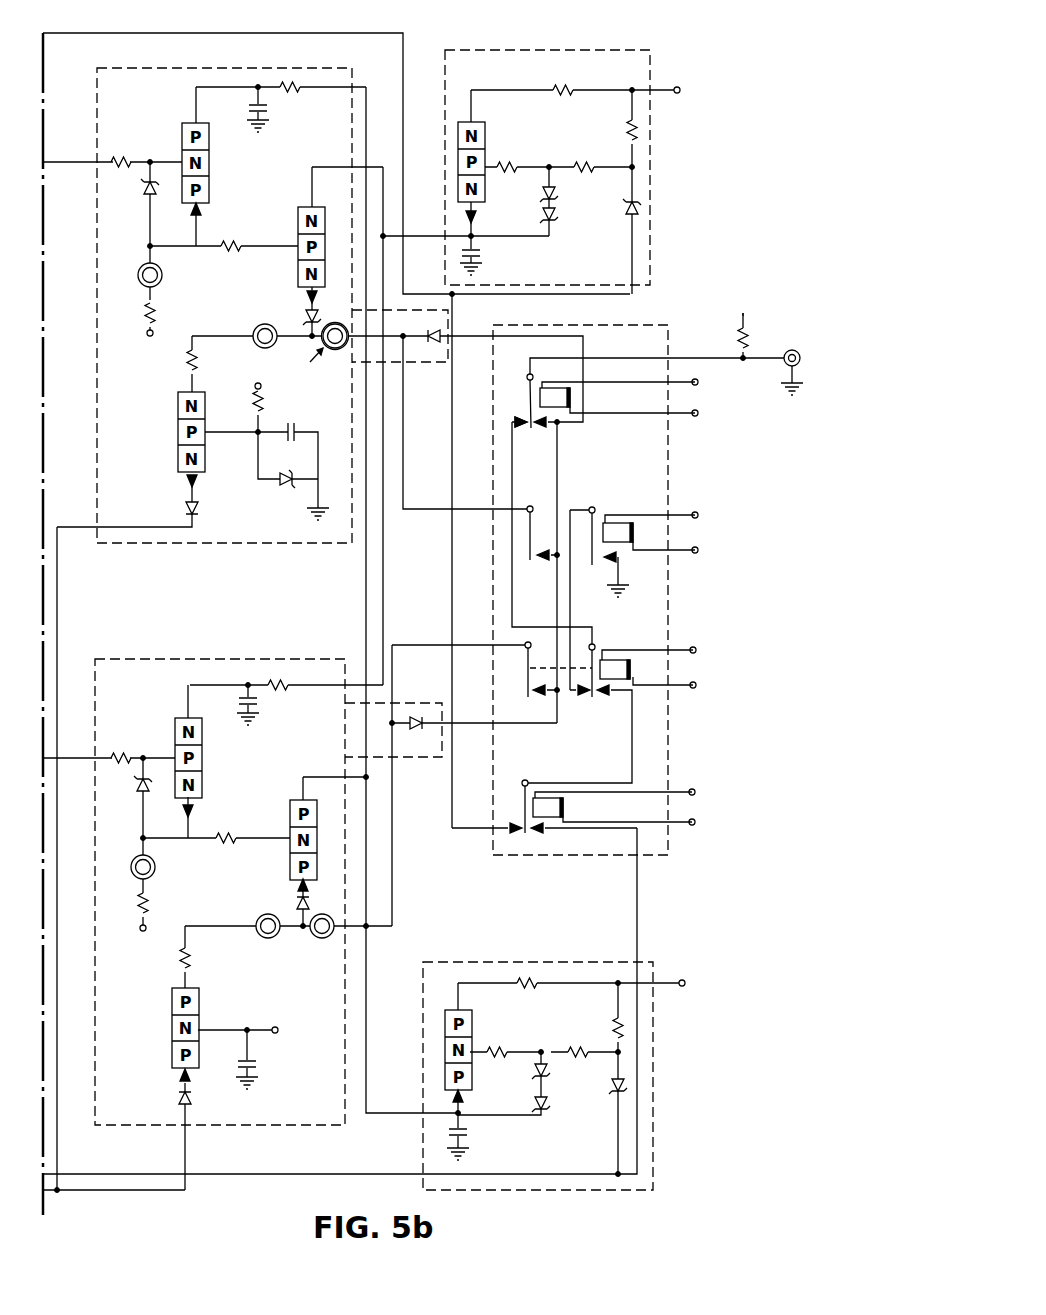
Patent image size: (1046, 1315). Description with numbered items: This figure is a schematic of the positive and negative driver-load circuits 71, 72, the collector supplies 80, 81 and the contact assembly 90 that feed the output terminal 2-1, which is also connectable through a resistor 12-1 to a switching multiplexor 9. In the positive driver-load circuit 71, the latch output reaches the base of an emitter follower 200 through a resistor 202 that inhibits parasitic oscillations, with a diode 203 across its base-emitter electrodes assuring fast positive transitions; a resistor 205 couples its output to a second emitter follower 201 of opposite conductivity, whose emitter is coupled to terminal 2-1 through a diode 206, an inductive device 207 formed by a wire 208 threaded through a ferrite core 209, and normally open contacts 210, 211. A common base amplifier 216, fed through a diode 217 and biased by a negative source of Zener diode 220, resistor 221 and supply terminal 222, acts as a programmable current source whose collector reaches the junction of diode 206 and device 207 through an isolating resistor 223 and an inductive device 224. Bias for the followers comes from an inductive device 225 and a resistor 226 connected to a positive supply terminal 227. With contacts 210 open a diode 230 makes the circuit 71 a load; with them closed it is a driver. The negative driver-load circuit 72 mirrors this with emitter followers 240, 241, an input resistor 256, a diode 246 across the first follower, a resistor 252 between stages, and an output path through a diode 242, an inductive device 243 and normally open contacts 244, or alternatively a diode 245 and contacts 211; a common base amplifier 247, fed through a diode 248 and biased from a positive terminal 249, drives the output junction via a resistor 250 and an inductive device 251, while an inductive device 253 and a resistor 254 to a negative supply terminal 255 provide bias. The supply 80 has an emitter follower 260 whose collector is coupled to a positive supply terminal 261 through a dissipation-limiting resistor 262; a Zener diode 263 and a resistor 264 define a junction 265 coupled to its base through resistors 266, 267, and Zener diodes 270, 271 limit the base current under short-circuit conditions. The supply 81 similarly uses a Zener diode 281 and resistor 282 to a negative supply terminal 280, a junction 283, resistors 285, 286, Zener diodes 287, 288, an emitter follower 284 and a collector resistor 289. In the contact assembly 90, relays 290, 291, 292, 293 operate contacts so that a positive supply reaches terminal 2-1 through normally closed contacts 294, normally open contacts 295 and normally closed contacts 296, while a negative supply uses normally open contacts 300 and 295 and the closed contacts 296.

The positive driver-load circuit 71 is at (238, 68).
The negative driver-load circuit 72 is at (215, 659).
The collector supply 80 is at (648, 150).
The collector supply 81 is at (652, 1108).
The contact assembly 90 is at (622, 857).
The emitter follower 200 is at (217, 166).
The emitter follower 201 is at (300, 212).
The resistor 202 is at (136, 151).
The diode 203 is at (143, 196).
The resistor 205 is at (236, 244).
The diode 206 is at (306, 314).
The inductive device 207 is at (327, 367).
The wire 208 is at (342, 331).
The ferrite core 209 is at (340, 345).
The normally open contacts 210 is at (533, 565).
The normally open contacts 211 is at (538, 432).
The common base amplifier 216 is at (178, 420).
The diode 217 is at (186, 510).
The Zener diode 220 is at (280, 486).
The resistor 221 is at (252, 409).
The negative supply terminal 222 is at (263, 390).
The isolating resistor 223 is at (186, 371).
The inductive device 224 is at (256, 332).
The inductive device 225 is at (162, 275).
The resistor 226 is at (147, 308).
The positive supply terminal 227 is at (152, 331).
The diode 230 is at (428, 332).
The emitter follower 240 is at (205, 745).
The emitter follower 241 is at (290, 866).
The diode 242 is at (298, 903).
The inductive device 243 is at (322, 938).
The normally open contacts 244 is at (528, 700).
The diode 245 is at (428, 729).
The diode 246 is at (140, 795).
The common base amplifier 247 is at (172, 1005).
The diode 248 is at (178, 1105).
The positive bias supply terminal 249 is at (273, 1027).
The resistor 250 is at (180, 965).
The inductive device 251 is at (262, 938).
The resistor 252 is at (225, 836).
The inductive device 253 is at (155, 867).
The resistor 254 is at (148, 905).
The negative supply terminal 255 is at (138, 928).
The resistor 256 is at (120, 753).
The emitter follower 260 is at (485, 128).
The positive supply terminal 261 is at (680, 86).
The resistor 262 is at (567, 86).
The Zener diode 263 is at (626, 212).
The resistor 264 is at (623, 130).
The junction 265 is at (628, 172).
The resistor 266 is at (585, 163).
The resistor 267 is at (503, 163).
The Zener diode 270 is at (555, 192).
The Zener diode 271 is at (543, 215).
The negative supply terminal 280 is at (681, 980).
The Zener diode 281 is at (612, 1085).
The resistor 282 is at (614, 1027).
The junction 283 is at (614, 1050).
The emitter follower 284 is at (470, 1025).
The resistor 285 is at (579, 1051).
The resistor 286 is at (501, 1051).
The Zener diode 287 is at (535, 1073).
The Zener diode 288 is at (548, 1112).
The resistor 289 is at (527, 990).
The relay 290 is at (571, 398).
The relay 291 is at (622, 522).
The relay 292 is at (636, 660).
The relay 293 is at (563, 808).
The normally closed contacts 294 is at (520, 822).
The normally open contacts 295 is at (615, 700).
The normally closed contacts 296 is at (521, 419).
The normally open contacts 300 is at (528, 835).
The resistor 12-1 is at (740, 342).
The output terminal 2-1 is at (786, 352).
The switching multiplexor 9 is at (732, 297).